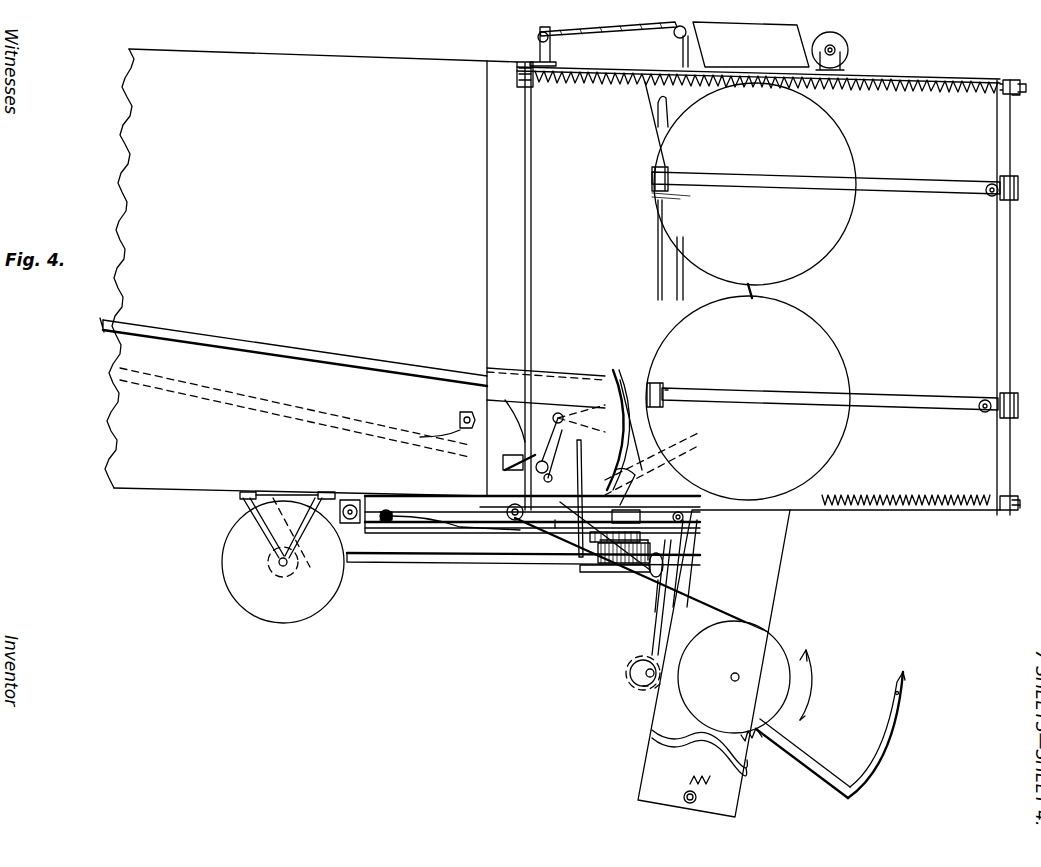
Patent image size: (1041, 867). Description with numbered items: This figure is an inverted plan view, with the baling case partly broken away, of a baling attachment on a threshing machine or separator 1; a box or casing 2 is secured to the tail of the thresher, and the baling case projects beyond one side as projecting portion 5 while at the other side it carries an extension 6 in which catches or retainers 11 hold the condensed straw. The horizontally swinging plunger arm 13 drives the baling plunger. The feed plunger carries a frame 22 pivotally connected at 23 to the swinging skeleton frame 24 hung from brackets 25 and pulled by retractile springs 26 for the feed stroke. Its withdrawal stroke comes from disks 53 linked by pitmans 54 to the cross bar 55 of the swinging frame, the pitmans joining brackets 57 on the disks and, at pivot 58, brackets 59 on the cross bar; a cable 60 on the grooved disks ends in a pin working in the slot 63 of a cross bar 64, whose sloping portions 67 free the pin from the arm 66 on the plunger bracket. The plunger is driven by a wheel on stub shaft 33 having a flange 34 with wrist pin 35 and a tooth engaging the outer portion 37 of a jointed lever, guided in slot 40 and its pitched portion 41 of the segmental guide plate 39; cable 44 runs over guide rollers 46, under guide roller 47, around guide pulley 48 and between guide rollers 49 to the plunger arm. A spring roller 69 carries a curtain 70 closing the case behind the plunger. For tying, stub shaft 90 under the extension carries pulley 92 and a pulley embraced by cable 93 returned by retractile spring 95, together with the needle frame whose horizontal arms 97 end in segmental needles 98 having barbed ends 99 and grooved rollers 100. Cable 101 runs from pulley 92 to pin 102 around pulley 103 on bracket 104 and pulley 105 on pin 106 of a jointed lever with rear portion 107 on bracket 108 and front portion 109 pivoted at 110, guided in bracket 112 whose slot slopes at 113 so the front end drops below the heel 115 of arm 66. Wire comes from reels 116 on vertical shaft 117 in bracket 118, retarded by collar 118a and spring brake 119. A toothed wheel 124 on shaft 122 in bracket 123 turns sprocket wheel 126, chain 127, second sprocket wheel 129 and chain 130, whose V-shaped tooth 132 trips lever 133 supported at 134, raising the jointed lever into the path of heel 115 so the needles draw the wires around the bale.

The threshing machine or separator 1 is at (311, 272).
The box or casing 2 is at (758, 286).
The projecting portion of baling case 5 is at (751, 44).
The baling case extension 6 is at (645, 760).
The catches or retainers 11 is at (704, 537).
The plunger arm 13 is at (281, 352).
The frame 22 is at (1019, 95).
The pivotal connection 23 is at (1029, 89).
The swinging skeleton frame 24 is at (1026, 503).
The brackets 25 is at (1012, 80).
The retractile springs 26 is at (927, 90).
The stub shaft 33 is at (520, 536).
The flange 34 is at (523, 587).
The wrist pin 35 is at (582, 565).
The outer portion of jointed lever 37 is at (388, 510).
The segmental guide plate 39 is at (457, 524).
The slot 40 is at (462, 525).
The pitched portion of slot 41 is at (418, 525).
The cable 44 is at (666, 283).
The guide rollers 46 is at (550, 40).
The guide roller 47 is at (673, 35).
The guide pulley 48 is at (686, 580).
The guide rollers 49 is at (650, 572).
The disks 53 is at (751, 291).
The pitmans 54 is at (918, 195).
The cross bar 55 is at (1011, 290).
The brackets 57 is at (672, 390).
The pivot 58 is at (986, 185).
The brackets 59 is at (987, 197).
The cable 60 is at (765, 287).
The slot 63 is at (672, 288).
The cross bar 64 is at (679, 310).
The arm 66 is at (655, 384).
The rearwardly sloping portion 67 is at (648, 101).
The spring roller 69 is at (847, 46).
The curtain 70 is at (845, 62).
The stub shaft 90 is at (731, 677).
The pulley 92 is at (745, 677).
The cable 93 is at (758, 746).
The retractile spring 95 is at (708, 783).
The horizontal arms 97 is at (812, 765).
The segmental arms or needles 98 is at (888, 740).
The barbed ends 99 is at (902, 678).
The grooved rollers 100 is at (894, 692).
The cable 101 is at (762, 623).
The pin 102 is at (515, 465).
The pulley 103 is at (513, 498).
The bracket 104 is at (493, 525).
The pulley 105 is at (540, 460).
The pin 106 is at (556, 414).
The rear portion of jointed lever 107 is at (508, 415).
The bracket 108 is at (459, 418).
The front portion of jointed lever 109 is at (622, 476).
The pivot 110 is at (468, 428).
The bracket 112 is at (619, 376).
The sloping portion of slot wall 113 is at (602, 474).
The heel 115 is at (623, 398).
The reels 116 is at (232, 564).
The vertical shaft 117 is at (279, 565).
The bracket 118 is at (243, 497).
The collar 118a is at (276, 580).
The spring brake 119 is at (262, 499).
The shaft 122 is at (633, 680).
The bracket 123 is at (640, 690).
The toothed wheel 124 is at (650, 700).
The sprocket wheel 126 is at (646, 670).
The chain 127 is at (650, 650).
The second sprocket wheel 129 is at (640, 545).
The chain 130 is at (618, 535).
The V-shaped tooth 132 is at (592, 573).
The lever 133 is at (590, 470).
The lever support 134 is at (560, 540).